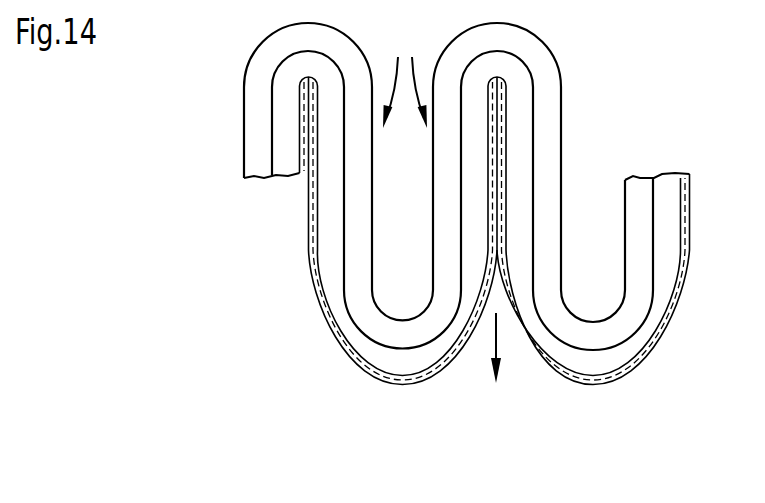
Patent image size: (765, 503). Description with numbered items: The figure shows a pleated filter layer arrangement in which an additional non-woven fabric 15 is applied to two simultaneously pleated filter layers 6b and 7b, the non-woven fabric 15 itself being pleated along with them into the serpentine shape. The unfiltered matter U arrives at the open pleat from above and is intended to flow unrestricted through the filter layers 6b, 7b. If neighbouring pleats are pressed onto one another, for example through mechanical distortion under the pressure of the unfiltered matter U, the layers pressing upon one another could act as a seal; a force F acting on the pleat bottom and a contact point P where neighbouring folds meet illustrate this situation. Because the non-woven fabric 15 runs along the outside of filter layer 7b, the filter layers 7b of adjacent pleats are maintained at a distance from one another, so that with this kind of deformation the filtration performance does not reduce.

The filter layer 6b is at (353, 255).
The filter layer 7b is at (330, 295).
The non-woven fabric 15 is at (326, 332).
The unfiltered matter U is at (405, 72).
The applied force F is at (496, 368).
The junction point P is at (500, 232).